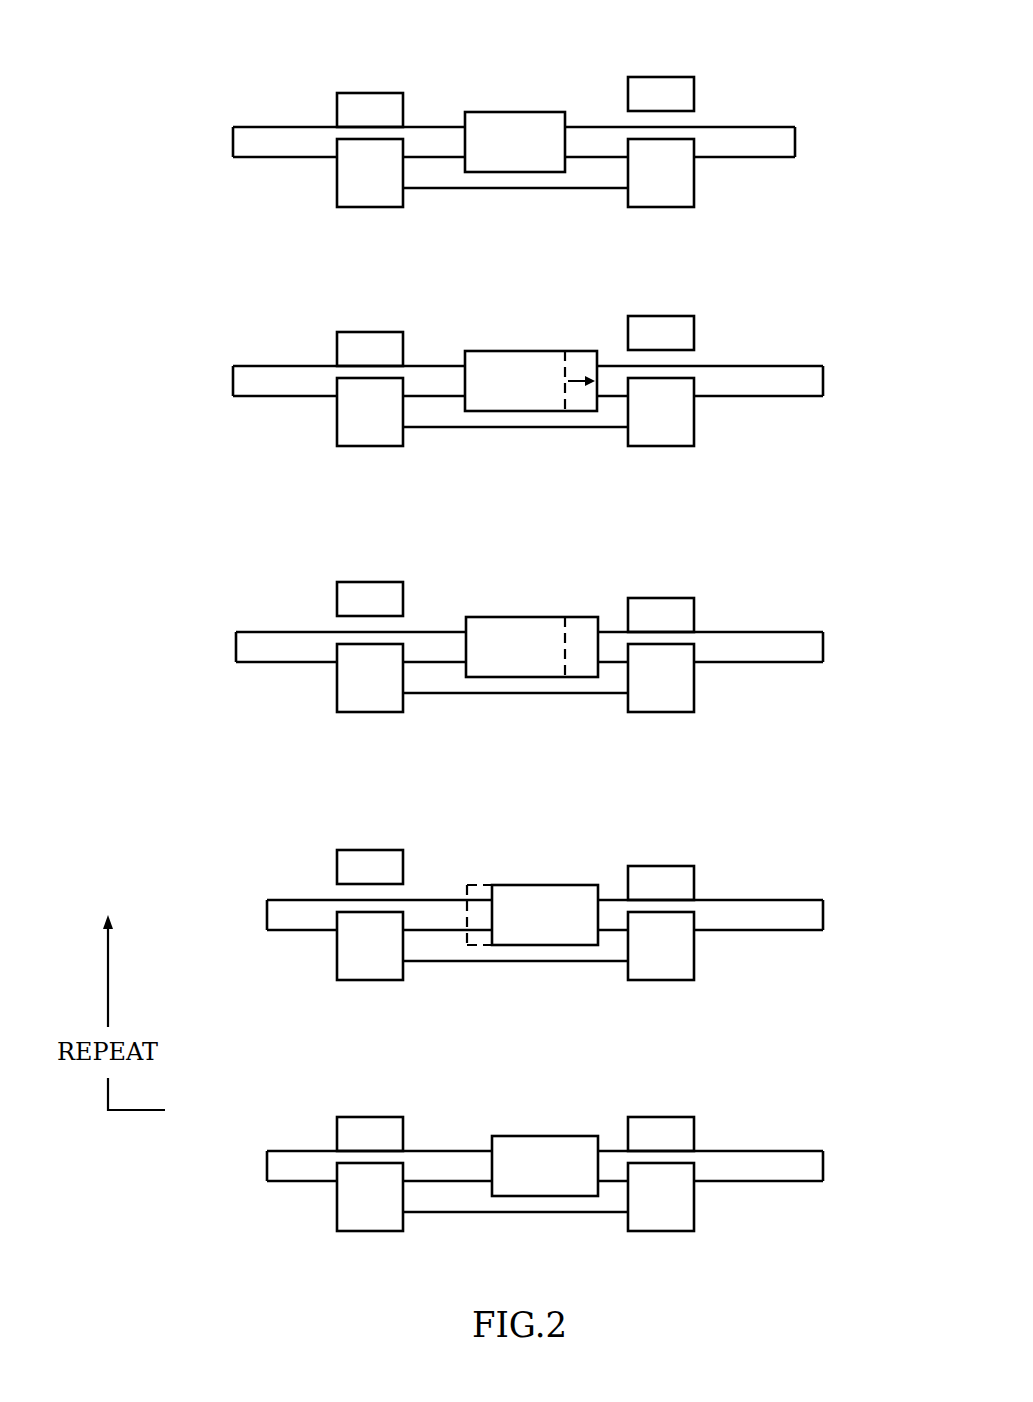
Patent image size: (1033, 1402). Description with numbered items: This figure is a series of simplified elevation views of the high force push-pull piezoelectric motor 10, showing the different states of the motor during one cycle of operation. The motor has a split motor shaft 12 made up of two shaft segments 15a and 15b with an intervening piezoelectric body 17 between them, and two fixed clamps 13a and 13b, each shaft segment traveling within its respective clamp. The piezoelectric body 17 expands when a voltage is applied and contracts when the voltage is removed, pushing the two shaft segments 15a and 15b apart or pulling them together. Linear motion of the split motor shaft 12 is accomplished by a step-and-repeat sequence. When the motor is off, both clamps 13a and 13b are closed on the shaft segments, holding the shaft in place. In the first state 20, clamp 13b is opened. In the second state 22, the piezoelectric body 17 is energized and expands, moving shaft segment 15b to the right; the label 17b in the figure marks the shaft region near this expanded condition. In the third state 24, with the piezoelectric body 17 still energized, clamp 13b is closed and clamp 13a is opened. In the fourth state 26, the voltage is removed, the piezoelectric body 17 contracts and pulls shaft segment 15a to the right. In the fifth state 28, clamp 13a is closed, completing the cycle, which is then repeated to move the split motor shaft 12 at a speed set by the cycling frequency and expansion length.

The high force push-pull piezoelectric motor 10 is at (522, 127).
The split motor shaft 12 is at (532, 97).
The clamp 13a is at (375, 93).
The clamp 13b is at (667, 77).
The shaft segment 15a is at (285, 142).
The shaft segment 15b is at (808, 140).
The piezoelectric body 17 is at (524, 112).
The slider end portion 17b is at (773, 366).
The first state 20 is at (522, 127).
The second state 22 is at (493, 385).
The third state 24 is at (196, 646).
The fourth state 26 is at (196, 914).
The fifth state 28 is at (196, 1165).